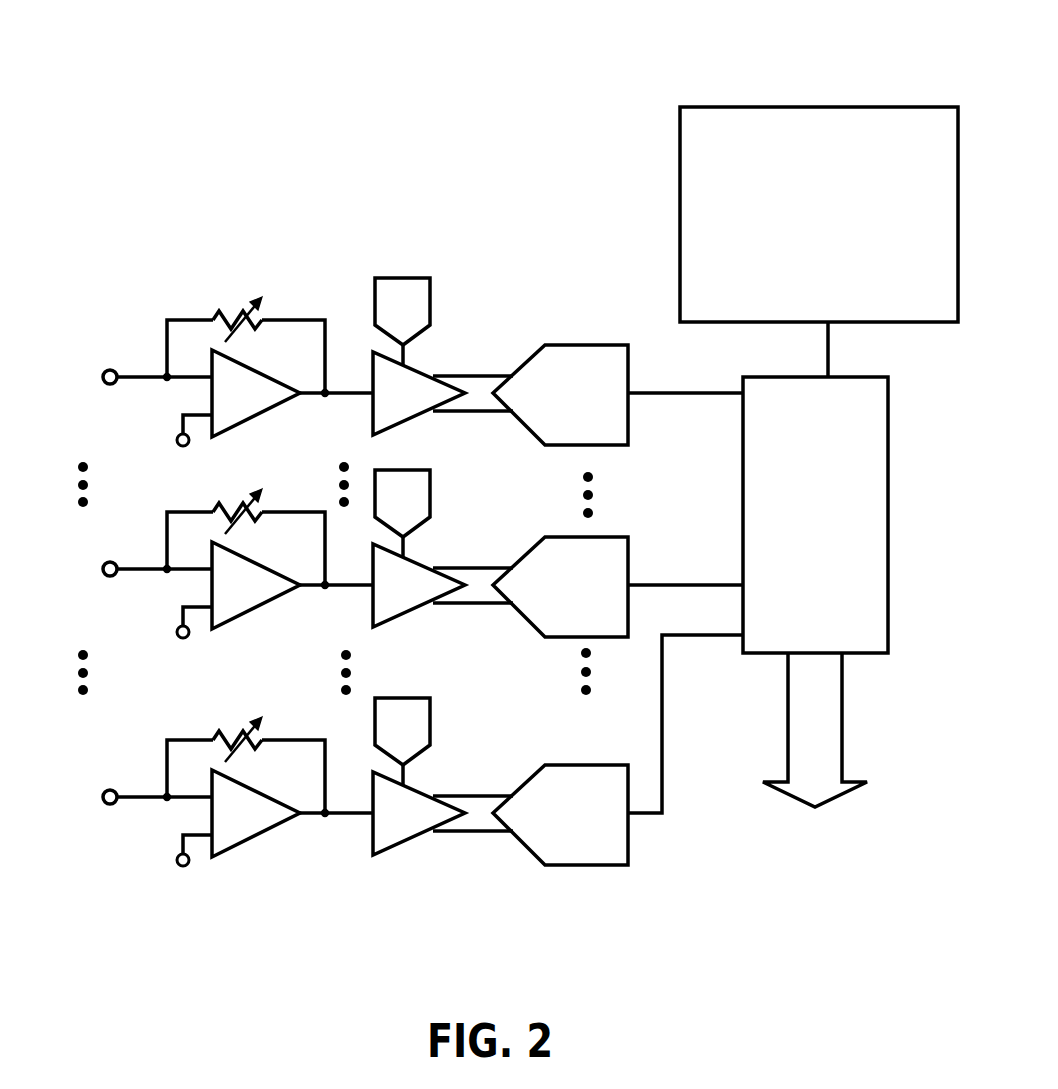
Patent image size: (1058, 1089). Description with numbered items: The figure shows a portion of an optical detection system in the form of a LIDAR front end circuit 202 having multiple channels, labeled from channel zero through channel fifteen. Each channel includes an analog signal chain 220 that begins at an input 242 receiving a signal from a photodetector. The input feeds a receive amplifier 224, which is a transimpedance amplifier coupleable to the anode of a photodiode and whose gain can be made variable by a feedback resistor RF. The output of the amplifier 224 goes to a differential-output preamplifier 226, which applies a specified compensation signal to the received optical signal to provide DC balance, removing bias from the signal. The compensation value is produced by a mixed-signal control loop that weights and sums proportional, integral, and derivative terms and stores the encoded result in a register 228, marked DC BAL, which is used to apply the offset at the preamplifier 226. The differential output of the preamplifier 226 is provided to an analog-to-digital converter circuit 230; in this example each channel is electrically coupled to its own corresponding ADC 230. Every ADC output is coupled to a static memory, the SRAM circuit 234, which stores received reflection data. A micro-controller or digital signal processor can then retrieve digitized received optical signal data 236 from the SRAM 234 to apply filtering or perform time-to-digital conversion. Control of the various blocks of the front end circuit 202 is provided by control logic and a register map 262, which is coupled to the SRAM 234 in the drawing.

The front end circuit 202 is at (752, 34).
The analog signal chain 220 is at (508, 265).
The receive amplifier 224 is at (212, 350).
The differential-output preamplifier 226 is at (373, 352).
The register 228 is at (375, 290).
The analog-to-digital converter circuit 230 is at (533, 360).
The SRAM circuit 234 is at (743, 377).
The digitized received optical signal data 236 is at (788, 732).
The input 242 is at (147, 375).
The control logic and register map 262 is at (680, 152).